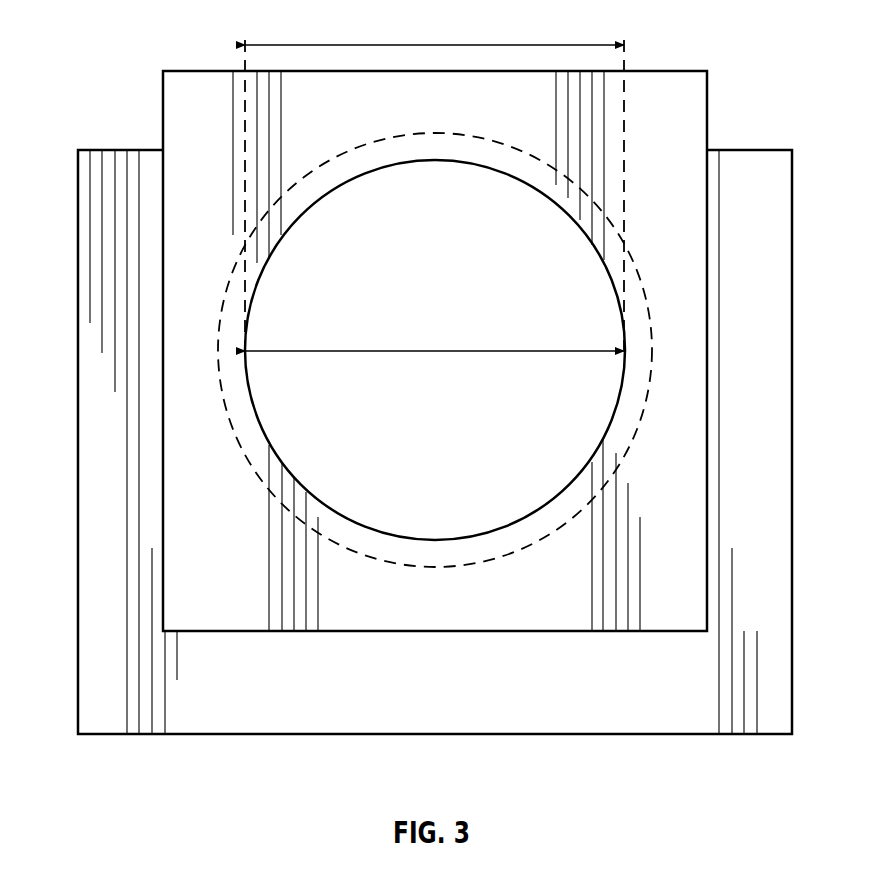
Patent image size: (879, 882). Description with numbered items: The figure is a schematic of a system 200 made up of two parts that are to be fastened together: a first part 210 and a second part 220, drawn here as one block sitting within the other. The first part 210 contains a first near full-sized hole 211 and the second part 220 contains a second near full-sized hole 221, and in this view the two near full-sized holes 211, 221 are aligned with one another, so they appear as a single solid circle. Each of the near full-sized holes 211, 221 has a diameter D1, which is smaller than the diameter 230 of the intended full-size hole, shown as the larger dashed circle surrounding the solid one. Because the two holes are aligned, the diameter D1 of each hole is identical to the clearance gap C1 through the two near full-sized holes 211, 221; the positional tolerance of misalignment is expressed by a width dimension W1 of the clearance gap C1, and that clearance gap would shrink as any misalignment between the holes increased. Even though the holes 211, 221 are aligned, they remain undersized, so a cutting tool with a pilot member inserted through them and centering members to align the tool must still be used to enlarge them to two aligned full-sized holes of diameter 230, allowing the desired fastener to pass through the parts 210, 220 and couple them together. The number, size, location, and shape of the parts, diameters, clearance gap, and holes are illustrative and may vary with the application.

The system 200 is at (113, 42).
The first part 210 is at (205, 70).
The second part 220 is at (147, 149).
The diameter of intended full-size hole 230 is at (362, 145).
The first near full-sized hole 211 is at (435, 486).
The second near full-sized hole 221 is at (472, 536).
The width dimension of clearance gap W1 is at (435, 45).
The diameter of near full-sized hole D1 is at (416, 351).
The clearance gap C1 is at (435, 350).